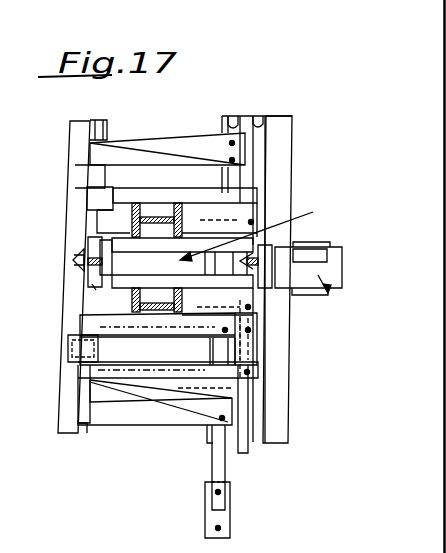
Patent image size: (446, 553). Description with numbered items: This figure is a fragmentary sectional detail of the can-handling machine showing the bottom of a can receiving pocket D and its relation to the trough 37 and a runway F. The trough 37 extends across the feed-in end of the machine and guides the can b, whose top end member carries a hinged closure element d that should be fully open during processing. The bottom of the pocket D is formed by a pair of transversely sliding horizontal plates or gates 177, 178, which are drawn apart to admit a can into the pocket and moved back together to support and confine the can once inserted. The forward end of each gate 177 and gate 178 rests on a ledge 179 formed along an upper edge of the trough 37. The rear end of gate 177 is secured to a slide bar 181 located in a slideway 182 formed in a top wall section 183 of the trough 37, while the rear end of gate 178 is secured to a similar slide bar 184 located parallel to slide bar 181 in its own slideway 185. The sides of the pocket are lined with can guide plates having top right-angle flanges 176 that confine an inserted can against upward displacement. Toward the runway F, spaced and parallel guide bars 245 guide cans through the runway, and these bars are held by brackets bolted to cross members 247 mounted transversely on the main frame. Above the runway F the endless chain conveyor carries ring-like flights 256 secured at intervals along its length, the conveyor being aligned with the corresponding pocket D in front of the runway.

The trough 37 is at (84, 132).
The ledge 179 is at (98, 120).
The gate 177 is at (145, 139).
The gate 178 is at (93, 198).
The cross member 247 is at (150, 218).
The top right-angle flange 176 is at (148, 245).
The slide bar 181 is at (232, 181).
The slideway 182 is at (234, 116).
The slideway 185 is at (259, 116).
The top wall section 183 is at (285, 134).
The slide bar 184 is at (253, 176).
The ring-like flight 256 is at (93, 250).
The guide bar 245 is at (317, 260).
The hinged closure element d is at (83, 258).
The can b is at (92, 287).
The can receiving pocket D is at (253, 232).
The runway F is at (330, 303).